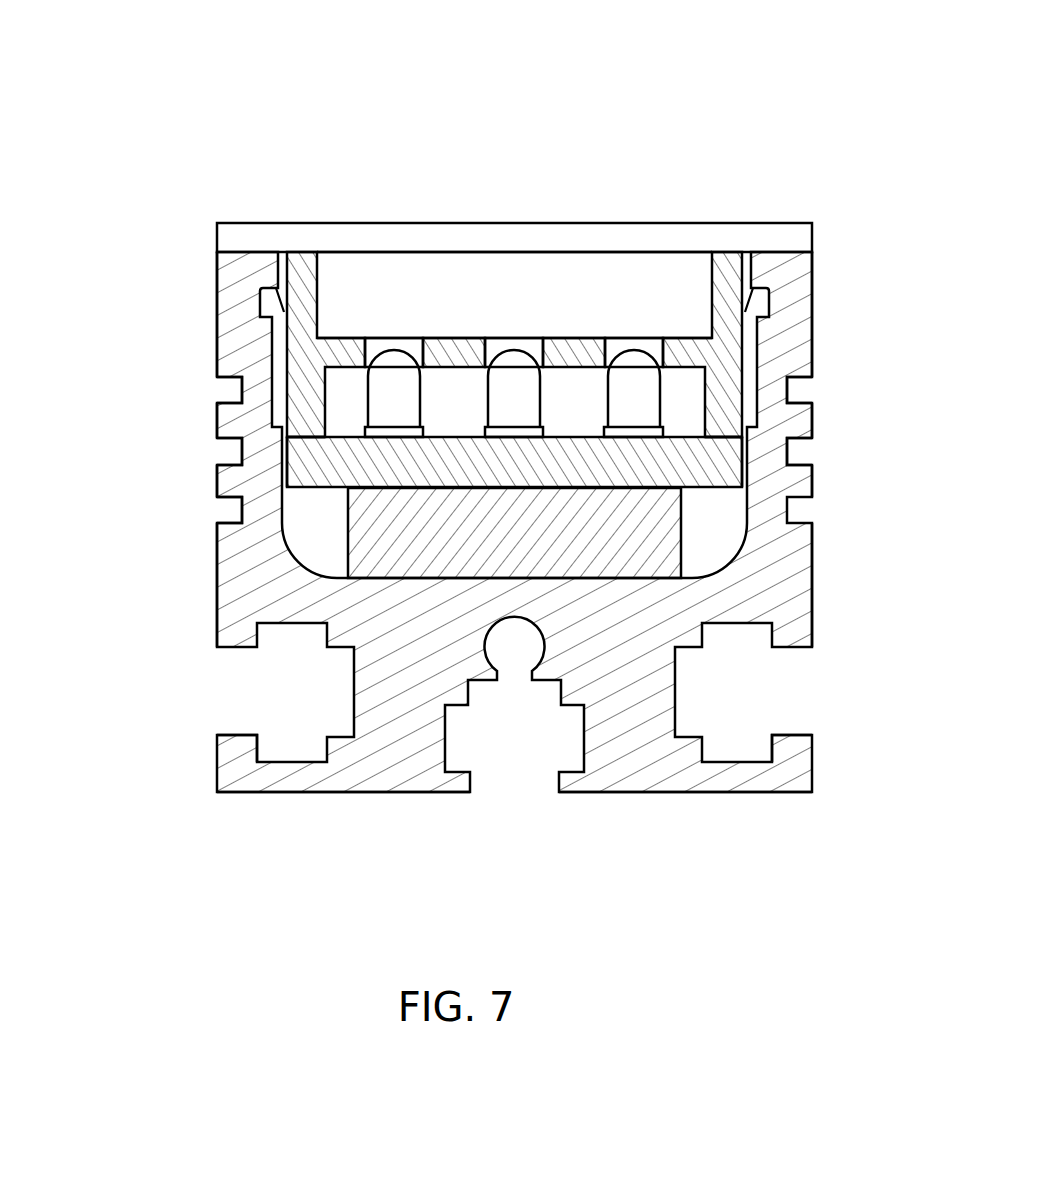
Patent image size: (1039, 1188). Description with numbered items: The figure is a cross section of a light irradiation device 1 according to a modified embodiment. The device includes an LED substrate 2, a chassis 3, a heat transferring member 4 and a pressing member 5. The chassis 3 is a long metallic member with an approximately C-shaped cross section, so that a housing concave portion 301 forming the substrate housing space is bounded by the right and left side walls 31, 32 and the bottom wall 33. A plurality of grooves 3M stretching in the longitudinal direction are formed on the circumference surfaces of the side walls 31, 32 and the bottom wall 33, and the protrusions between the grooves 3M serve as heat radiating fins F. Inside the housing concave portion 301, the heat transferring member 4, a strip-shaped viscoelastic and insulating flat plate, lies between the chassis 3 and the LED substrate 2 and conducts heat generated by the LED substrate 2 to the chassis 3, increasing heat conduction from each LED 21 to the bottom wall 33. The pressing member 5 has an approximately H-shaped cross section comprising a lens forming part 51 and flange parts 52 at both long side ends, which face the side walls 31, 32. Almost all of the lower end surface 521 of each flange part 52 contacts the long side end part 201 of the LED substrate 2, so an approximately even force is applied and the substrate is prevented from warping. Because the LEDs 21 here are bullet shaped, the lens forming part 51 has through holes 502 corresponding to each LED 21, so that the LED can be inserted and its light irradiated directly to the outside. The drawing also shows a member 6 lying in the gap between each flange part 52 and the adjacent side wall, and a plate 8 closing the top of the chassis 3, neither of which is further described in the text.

The light irradiation device 1 is at (133, 96).
The LED substrate 2 is at (288, 466).
The LED 21 is at (421, 398).
The long side end part 201 is at (290, 416).
The chassis 3 is at (217, 272).
The left side wall 31 is at (217, 322).
The right side wall 32 is at (812, 322).
The bottom wall 33 is at (388, 794).
The grooves 3M is at (217, 380).
The heat transferring member 4 is at (682, 538).
The pressing member 5 is at (517, 352).
The lens forming part 51 is at (480, 338).
The flange part 52 is at (319, 277).
The lower end surface 521 is at (292, 478).
The through hole 502 is at (400, 336).
The seal member 6 is at (271, 270).
The cover plate 8 is at (478, 222).
The housing concave portion 301 is at (568, 310).
The heat radiating fins F is at (812, 438).